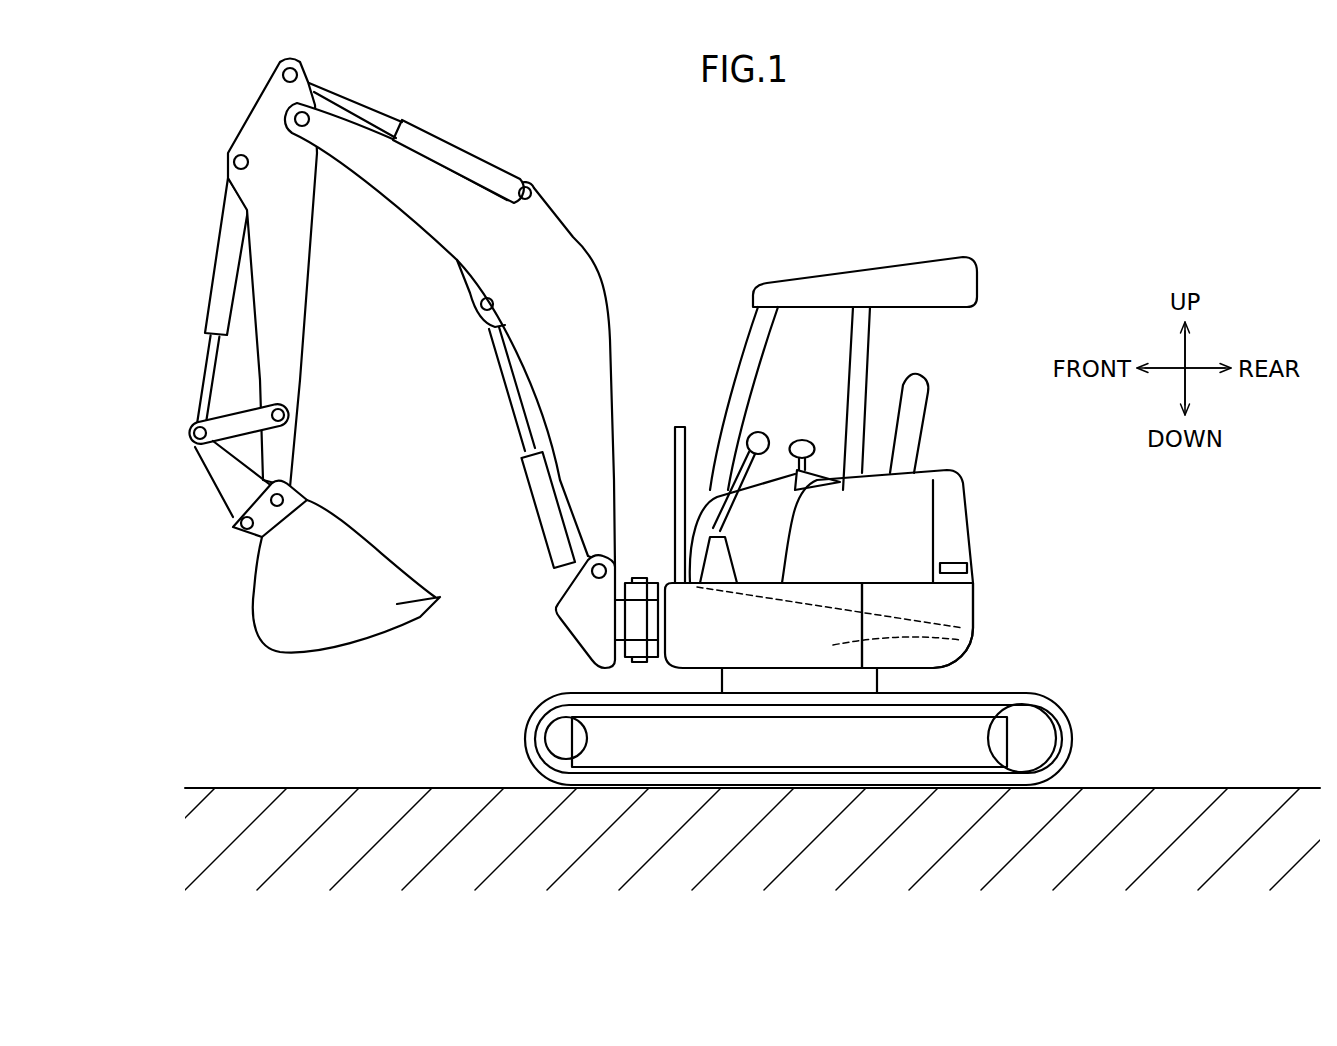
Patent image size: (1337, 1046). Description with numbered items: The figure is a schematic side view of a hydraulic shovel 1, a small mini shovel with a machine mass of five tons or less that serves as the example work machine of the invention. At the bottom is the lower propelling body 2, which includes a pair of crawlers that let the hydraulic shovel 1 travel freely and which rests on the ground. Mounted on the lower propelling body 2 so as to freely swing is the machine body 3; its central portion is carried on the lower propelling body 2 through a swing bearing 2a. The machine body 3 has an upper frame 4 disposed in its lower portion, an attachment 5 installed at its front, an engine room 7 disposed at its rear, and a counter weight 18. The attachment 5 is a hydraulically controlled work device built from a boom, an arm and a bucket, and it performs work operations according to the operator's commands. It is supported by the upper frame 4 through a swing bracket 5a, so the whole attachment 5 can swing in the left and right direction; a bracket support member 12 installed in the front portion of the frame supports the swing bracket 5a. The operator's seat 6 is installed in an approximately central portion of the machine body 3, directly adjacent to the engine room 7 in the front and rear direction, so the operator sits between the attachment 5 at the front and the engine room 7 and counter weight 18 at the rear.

The hydraulic shovel 1 is at (1013, 182).
The lower propelling body 2 is at (1073, 703).
The swing bearing 2a is at (878, 680).
The machine body 3 is at (1003, 487).
The upper frame 4 is at (960, 640).
The attachment 5 is at (458, 135).
The swing bracket 5a is at (585, 591).
The operator's seat 6 is at (800, 426).
The engine room 7 is at (955, 456).
The bracket support member 12 is at (658, 583).
The counter weight 18 is at (957, 602).